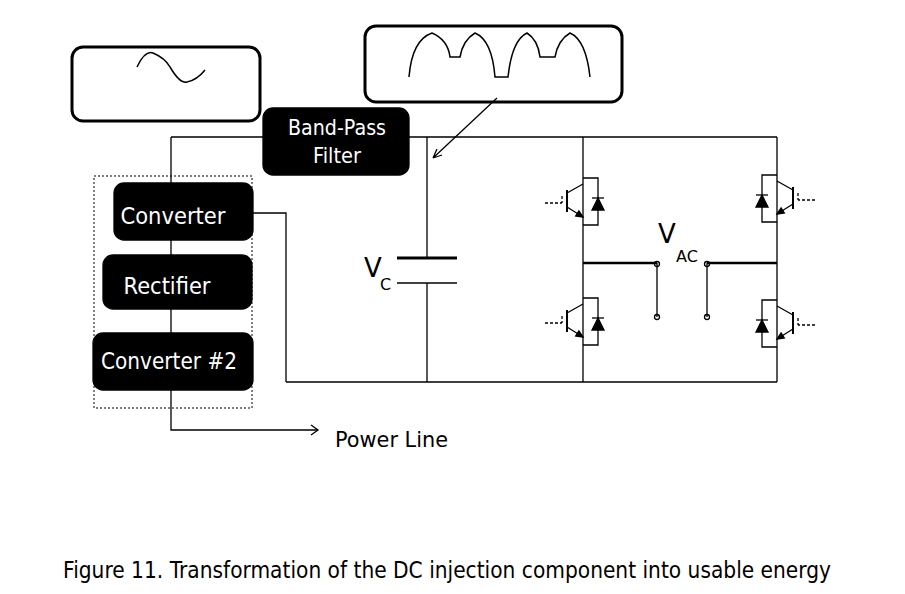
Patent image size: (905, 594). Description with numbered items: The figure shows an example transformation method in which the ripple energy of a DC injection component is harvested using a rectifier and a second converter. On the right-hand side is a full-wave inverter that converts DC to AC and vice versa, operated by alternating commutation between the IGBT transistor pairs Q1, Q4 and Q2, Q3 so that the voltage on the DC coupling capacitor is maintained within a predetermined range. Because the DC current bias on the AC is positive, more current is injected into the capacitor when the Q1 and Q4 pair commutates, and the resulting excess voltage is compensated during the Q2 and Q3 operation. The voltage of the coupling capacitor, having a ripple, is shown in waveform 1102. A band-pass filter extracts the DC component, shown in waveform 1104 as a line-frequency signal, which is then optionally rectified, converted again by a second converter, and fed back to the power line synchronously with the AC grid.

The ripple of the coupling capacitor voltage 1102 is at (627, 40).
The extracted DC component after the band-pass filter 1104 is at (65, 70).
The IGBT transistor Q1 is at (535, 206).
The IGBT transistor Q2 is at (536, 323).
The IGBT transistor Q3 is at (819, 200).
The IGBT transistor Q4 is at (819, 318).